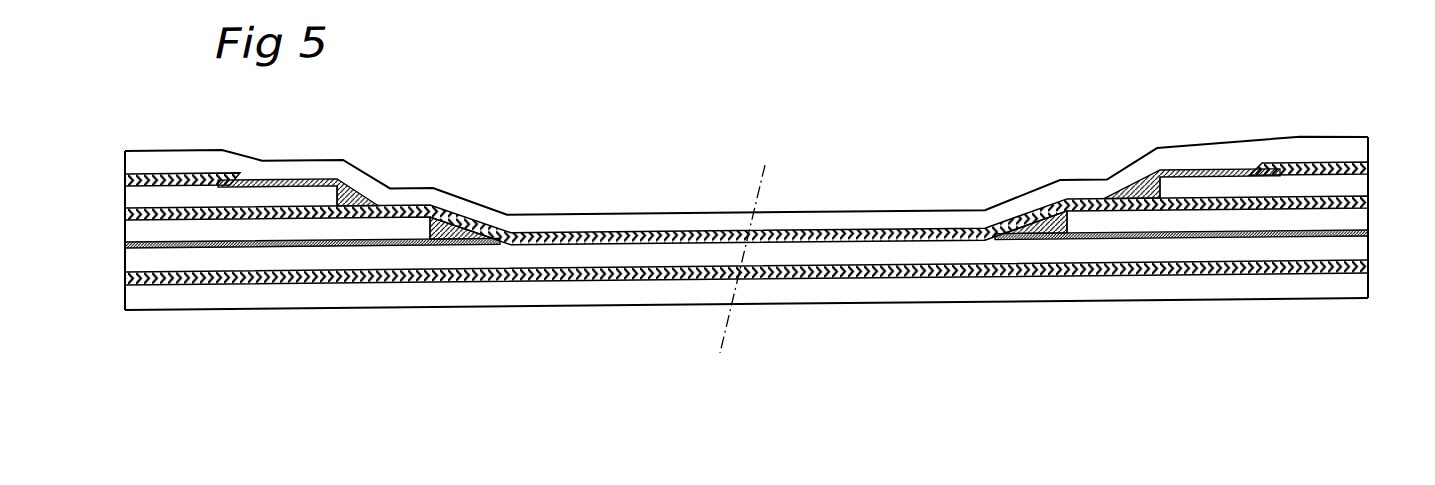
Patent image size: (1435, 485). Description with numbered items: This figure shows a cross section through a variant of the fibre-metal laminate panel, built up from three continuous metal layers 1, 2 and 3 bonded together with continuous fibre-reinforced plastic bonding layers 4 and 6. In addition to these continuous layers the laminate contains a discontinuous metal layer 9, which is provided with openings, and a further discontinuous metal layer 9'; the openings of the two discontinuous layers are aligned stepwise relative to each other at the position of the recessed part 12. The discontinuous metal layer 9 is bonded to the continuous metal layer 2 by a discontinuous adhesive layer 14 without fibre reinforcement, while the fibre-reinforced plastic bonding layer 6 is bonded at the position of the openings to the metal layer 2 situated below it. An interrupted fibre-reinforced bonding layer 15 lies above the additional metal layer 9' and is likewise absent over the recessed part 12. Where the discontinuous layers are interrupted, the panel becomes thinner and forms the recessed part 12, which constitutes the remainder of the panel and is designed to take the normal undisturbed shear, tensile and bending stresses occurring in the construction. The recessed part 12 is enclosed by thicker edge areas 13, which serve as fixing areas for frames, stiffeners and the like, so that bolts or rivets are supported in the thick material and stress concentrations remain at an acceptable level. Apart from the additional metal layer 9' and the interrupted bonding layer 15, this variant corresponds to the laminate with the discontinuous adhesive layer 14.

The continuous metal layer 1 is at (1342, 295).
The continuous metal layer 2 is at (1362, 274).
The continuous metal layer 3 is at (1340, 160).
The continuous fibre-reinforced plastic bonding layer 4 is at (1360, 295).
The continuous fibre-reinforced plastic bonding layer 6 is at (1361, 197).
The discontinuous metal layer 9 is at (767, 222).
The further discontinuous metal layer 9' is at (816, 179).
The recessed part 12 is at (892, 210).
The thicker edge area 13 is at (396, 185).
The discontinuous adhesive layer 14 is at (1365, 245).
The interrupted fibre-reinforced bonding layer 15 is at (1369, 178).